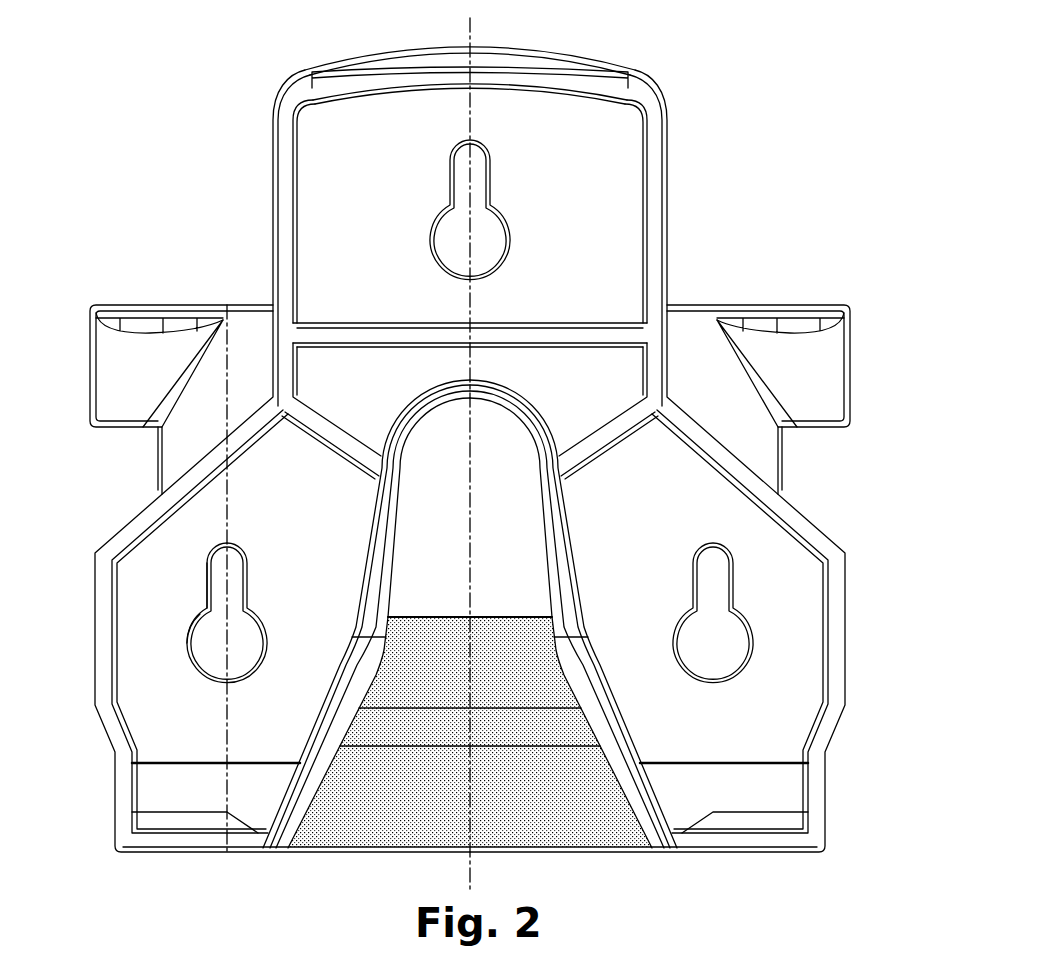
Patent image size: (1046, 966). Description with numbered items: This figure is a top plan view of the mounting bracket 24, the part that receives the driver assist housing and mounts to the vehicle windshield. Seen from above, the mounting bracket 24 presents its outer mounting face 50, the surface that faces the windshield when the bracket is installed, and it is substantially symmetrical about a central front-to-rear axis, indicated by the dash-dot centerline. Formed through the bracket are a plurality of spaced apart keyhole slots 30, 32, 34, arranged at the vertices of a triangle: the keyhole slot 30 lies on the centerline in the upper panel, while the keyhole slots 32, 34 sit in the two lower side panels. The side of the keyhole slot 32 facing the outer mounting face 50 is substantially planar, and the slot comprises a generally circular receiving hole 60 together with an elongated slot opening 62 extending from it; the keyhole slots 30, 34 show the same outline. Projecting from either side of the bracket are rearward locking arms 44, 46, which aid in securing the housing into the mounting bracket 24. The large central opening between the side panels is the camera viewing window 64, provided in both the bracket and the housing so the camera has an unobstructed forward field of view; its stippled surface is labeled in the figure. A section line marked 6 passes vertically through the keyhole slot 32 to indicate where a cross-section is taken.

The mounting bracket 24 is at (652, 70).
The keyhole slot 30 is at (494, 186).
The keyhole slot 32 is at (247, 575).
The keyhole slot 34 is at (734, 582).
The rearward locking arm 44 is at (88, 370).
The rearward locking arm 46 is at (851, 375).
The outer mounting face 50 is at (605, 242).
The circular receiving hole 60 is at (478, 27).
The elongated slot opening 62 is at (207, 572).
The camera viewing window 64 is at (378, 808).
The section line 6- 6 is at (227, 900).